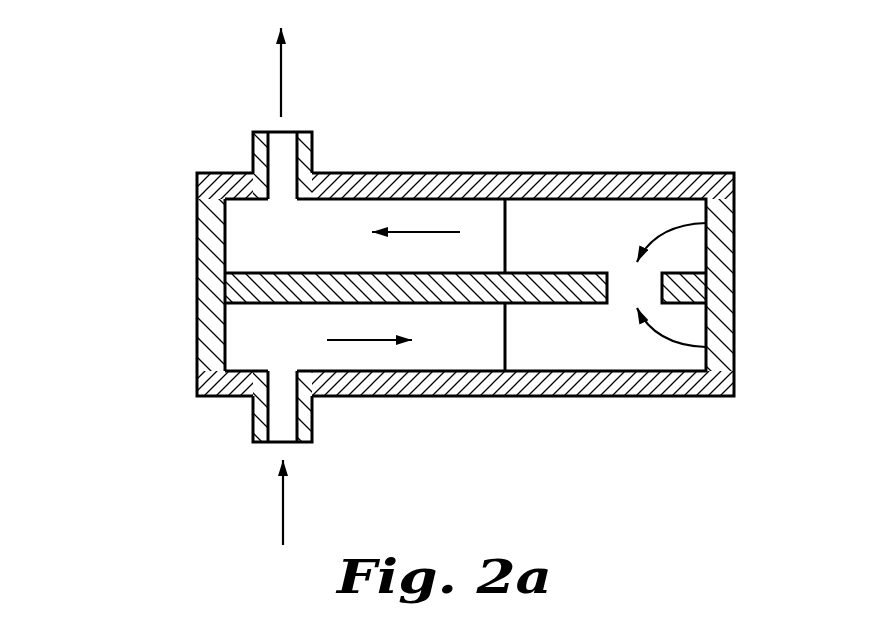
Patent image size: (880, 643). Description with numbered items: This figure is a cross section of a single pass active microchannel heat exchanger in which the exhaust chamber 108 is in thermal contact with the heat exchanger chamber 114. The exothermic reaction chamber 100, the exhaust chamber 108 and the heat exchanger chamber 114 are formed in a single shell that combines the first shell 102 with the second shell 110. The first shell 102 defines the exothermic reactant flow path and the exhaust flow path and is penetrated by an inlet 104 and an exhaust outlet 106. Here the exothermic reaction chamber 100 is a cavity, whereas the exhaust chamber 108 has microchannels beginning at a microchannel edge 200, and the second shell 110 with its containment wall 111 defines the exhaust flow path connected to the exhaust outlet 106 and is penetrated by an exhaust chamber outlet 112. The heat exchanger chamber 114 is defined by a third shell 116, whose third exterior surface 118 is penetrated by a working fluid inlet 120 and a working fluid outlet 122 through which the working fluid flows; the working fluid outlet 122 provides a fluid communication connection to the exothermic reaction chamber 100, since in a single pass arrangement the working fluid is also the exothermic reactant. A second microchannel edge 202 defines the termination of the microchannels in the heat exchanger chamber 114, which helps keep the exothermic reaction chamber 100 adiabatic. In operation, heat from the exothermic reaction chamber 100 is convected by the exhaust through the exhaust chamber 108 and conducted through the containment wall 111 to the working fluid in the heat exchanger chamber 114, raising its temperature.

The exothermic reaction chamber 100 is at (583, 249).
The first shell 102 is at (445, 147).
The inlet 104 is at (706, 223).
The exhaust outlet 106 is at (480, 233).
The exhaust chamber 108 is at (307, 253).
The second shell 110 is at (177, 163).
The containment wall 111 is at (291, 300).
The exhaust chamber outlet 112 is at (255, 138).
The heat exchanger chamber 114 is at (307, 357).
The third shell 116 is at (178, 405).
The third exterior surface 118 is at (362, 395).
The working fluid inlet 120 is at (313, 415).
The working fluid outlet 122 is at (706, 347).
The microchannel edge 200 is at (505, 215).
The second microchannel edge 202 is at (505, 345).